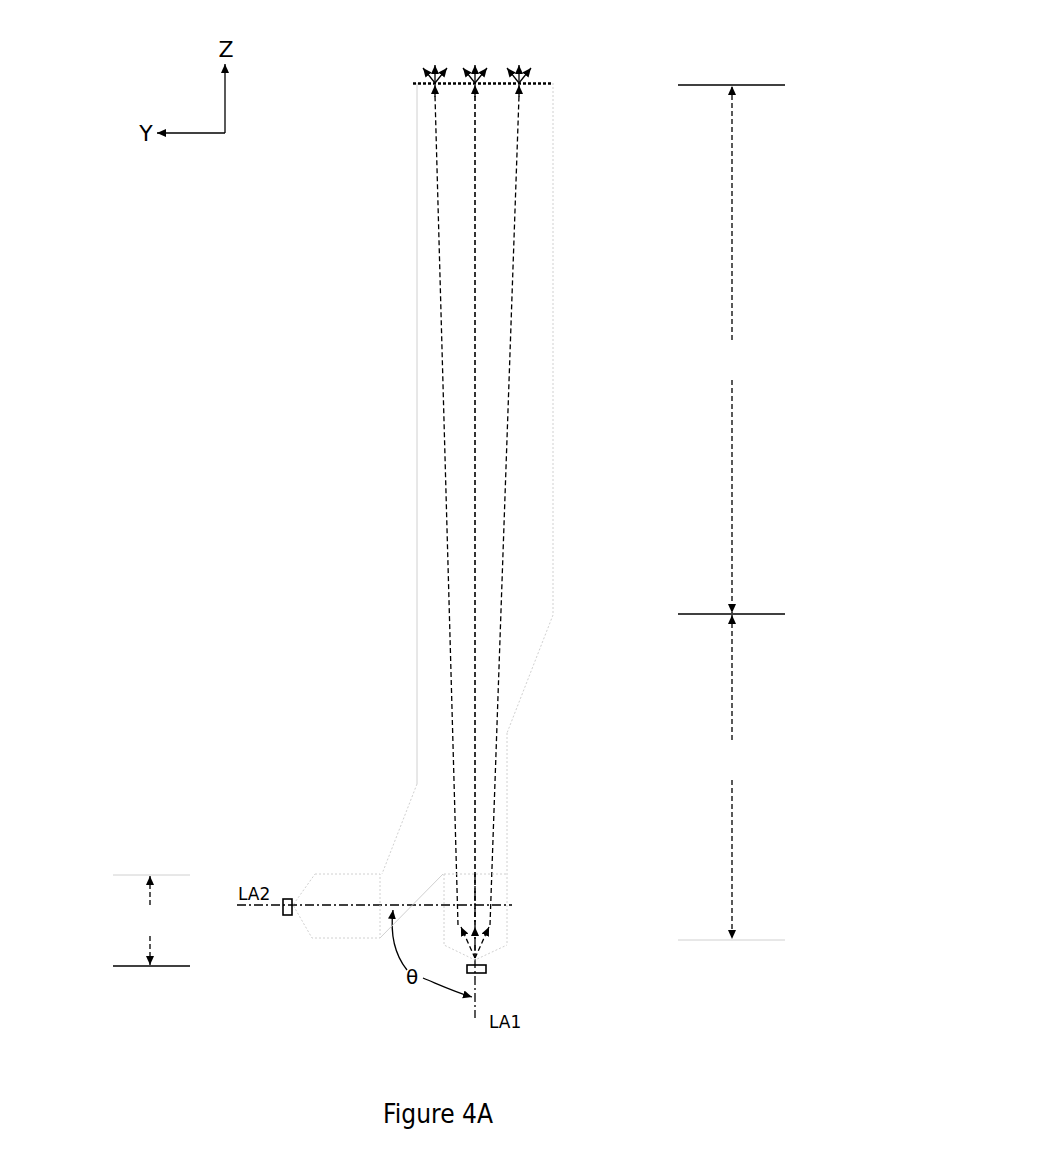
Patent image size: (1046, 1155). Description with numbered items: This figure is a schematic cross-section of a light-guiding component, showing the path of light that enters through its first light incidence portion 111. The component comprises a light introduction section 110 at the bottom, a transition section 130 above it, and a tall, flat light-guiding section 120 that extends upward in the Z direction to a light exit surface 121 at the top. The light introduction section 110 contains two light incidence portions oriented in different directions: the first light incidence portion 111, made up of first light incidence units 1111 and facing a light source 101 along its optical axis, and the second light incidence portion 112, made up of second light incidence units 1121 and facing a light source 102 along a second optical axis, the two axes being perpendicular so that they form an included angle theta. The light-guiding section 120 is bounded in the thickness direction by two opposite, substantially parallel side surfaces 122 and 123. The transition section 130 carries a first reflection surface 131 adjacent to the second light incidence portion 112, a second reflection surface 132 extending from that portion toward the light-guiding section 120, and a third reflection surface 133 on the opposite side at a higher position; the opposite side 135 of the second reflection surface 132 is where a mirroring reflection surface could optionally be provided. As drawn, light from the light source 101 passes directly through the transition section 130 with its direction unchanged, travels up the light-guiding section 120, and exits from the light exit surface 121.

The light source 101 is at (486, 968).
The light source 102 is at (283, 913).
The light introduction section 110 is at (151, 920).
The first light incidence portion 111 is at (541, 905).
The first light incidence unit 1111 is at (541, 905).
The second light incidence portion 112 is at (306, 846).
The second light incidence unit 1121 is at (306, 846).
The light-guiding section 120 is at (731, 349).
The light exit surface 121 is at (543, 81).
The side surface 122 is at (417, 355).
The side surface 123 is at (553, 392).
The transition section 130 is at (731, 777).
The first reflection surface 131 is at (413, 901).
The second reflection surface 132 is at (397, 827).
The third reflection surface 133 is at (538, 663).
The opposite side 135 is at (507, 810).